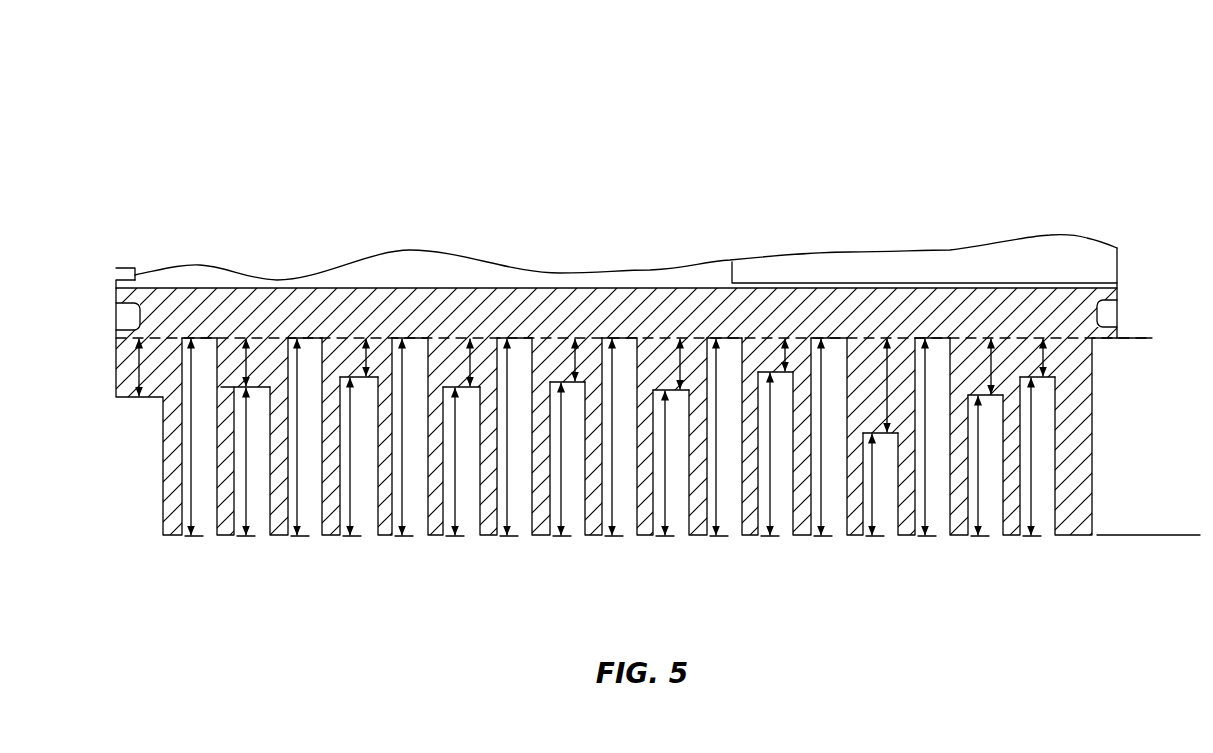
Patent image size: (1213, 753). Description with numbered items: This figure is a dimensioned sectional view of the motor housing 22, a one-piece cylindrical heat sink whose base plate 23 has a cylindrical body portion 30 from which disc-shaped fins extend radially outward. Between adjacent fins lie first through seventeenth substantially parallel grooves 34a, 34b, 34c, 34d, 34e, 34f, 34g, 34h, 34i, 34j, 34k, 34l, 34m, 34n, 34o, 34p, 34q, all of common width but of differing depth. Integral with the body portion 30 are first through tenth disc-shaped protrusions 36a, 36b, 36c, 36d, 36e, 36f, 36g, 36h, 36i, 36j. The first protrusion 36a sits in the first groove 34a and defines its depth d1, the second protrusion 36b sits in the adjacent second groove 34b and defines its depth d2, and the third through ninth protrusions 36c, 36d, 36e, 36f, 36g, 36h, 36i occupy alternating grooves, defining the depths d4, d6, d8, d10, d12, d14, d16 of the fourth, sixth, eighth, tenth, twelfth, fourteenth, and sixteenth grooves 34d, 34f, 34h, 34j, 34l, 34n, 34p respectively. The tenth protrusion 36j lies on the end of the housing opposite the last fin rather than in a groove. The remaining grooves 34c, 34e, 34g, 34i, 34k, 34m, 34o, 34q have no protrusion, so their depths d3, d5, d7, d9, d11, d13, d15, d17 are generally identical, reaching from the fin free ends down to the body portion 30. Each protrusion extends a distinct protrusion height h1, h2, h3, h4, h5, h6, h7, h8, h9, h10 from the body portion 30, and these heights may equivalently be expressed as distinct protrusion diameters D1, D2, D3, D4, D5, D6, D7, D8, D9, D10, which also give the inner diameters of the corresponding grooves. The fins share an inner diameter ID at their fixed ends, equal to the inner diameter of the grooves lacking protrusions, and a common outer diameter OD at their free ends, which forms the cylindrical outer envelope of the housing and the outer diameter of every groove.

The motor housing 22 is at (626, 331).
The cylindrical body portion 30 is at (584, 373).
The base plate 23 is at (112, 287).
The first groove 34a is at (1050, 507).
The second groove 34b is at (998, 507).
The third groove 34c is at (945, 507).
The fourth groove 34d is at (893, 507).
The fifth groove 34e is at (842, 507).
The sixth groove 34f is at (788, 507).
The seventh groove 34g is at (737, 507).
The eighth groove 34h is at (684, 507).
The ninth groove 34i is at (632, 507).
The tenth groove 34j is at (580, 507).
The eleventh groove 34k is at (527, 507).
The twelfth groove 34l is at (475, 507).
The thirteenth groove 34m is at (423, 507).
The fourteenth groove 34n is at (373, 507).
The fifteenth groove 34o is at (317, 507).
The sixteenth groove 34p is at (265, 507).
The seventeenth groove 34q is at (212, 507).
The first protrusion 36a is at (1058, 356).
The second protrusion 36b is at (952, 351).
The third protrusion 36c is at (848, 351).
The fourth protrusion 36d is at (745, 350).
The fifth protrusion 36e is at (640, 350).
The sixth protrusion 36f is at (533, 348).
The seventh protrusion 36g is at (429, 348).
The eighth protrusion 36h is at (323, 348).
The ninth protrusion 36i is at (218, 348).
The tenth protrusion 36j is at (122, 378).
The groove depth d1 is at (1032, 472).
The groove depth d2 is at (978, 472).
The groove depth d3 is at (925, 472).
The groove depth d4 is at (873, 472).
The groove depth d5 is at (821, 472).
The groove depth d6 is at (768, 472).
The groove depth d7 is at (717, 472).
The groove depth d8 is at (663, 472).
The groove depth d9 is at (612, 472).
The groove depth d10 is at (560, 472).
The groove depth d11 is at (507, 472).
The groove depth d12 is at (453, 472).
The groove depth d13 is at (402, 472).
The groove depth d14 is at (350, 472).
The groove depth d15 is at (298, 472).
The groove depth d16 is at (244, 472).
The groove depth d17 is at (192, 472).
The first protrusion height h1 is at (1047, 358).
The second protrusion height h2 is at (995, 360).
The third protrusion height h3 is at (891, 363).
The fourth protrusion height h4 is at (789, 363).
The fifth protrusion height h5 is at (684, 363).
The sixth protrusion height h6 is at (579, 363).
The seventh protrusion height h7 is at (474, 363).
The eighth protrusion height h8 is at (370, 365).
The ninth protrusion height h9 is at (251, 364).
The tenth protrusion height h10 is at (140, 376).
The first protrusion diameter D1 is at (1030, 376).
The second protrusion diameter D2 is at (977, 394).
The third protrusion diameter D3 is at (872, 432).
The fourth protrusion diameter D4 is at (770, 371).
The fifth protrusion diameter D5 is at (663, 389).
The sixth protrusion diameter D6 is at (562, 381).
The seventh protrusion diameter D7 is at (455, 386).
The eighth protrusion diameter D8 is at (350, 376).
The ninth protrusion diameter D9 is at (226, 386).
The tenth protrusion diameter D10 is at (160, 396).
The inner diameter ID is at (1136, 337).
The outer diameter OD is at (1186, 534).